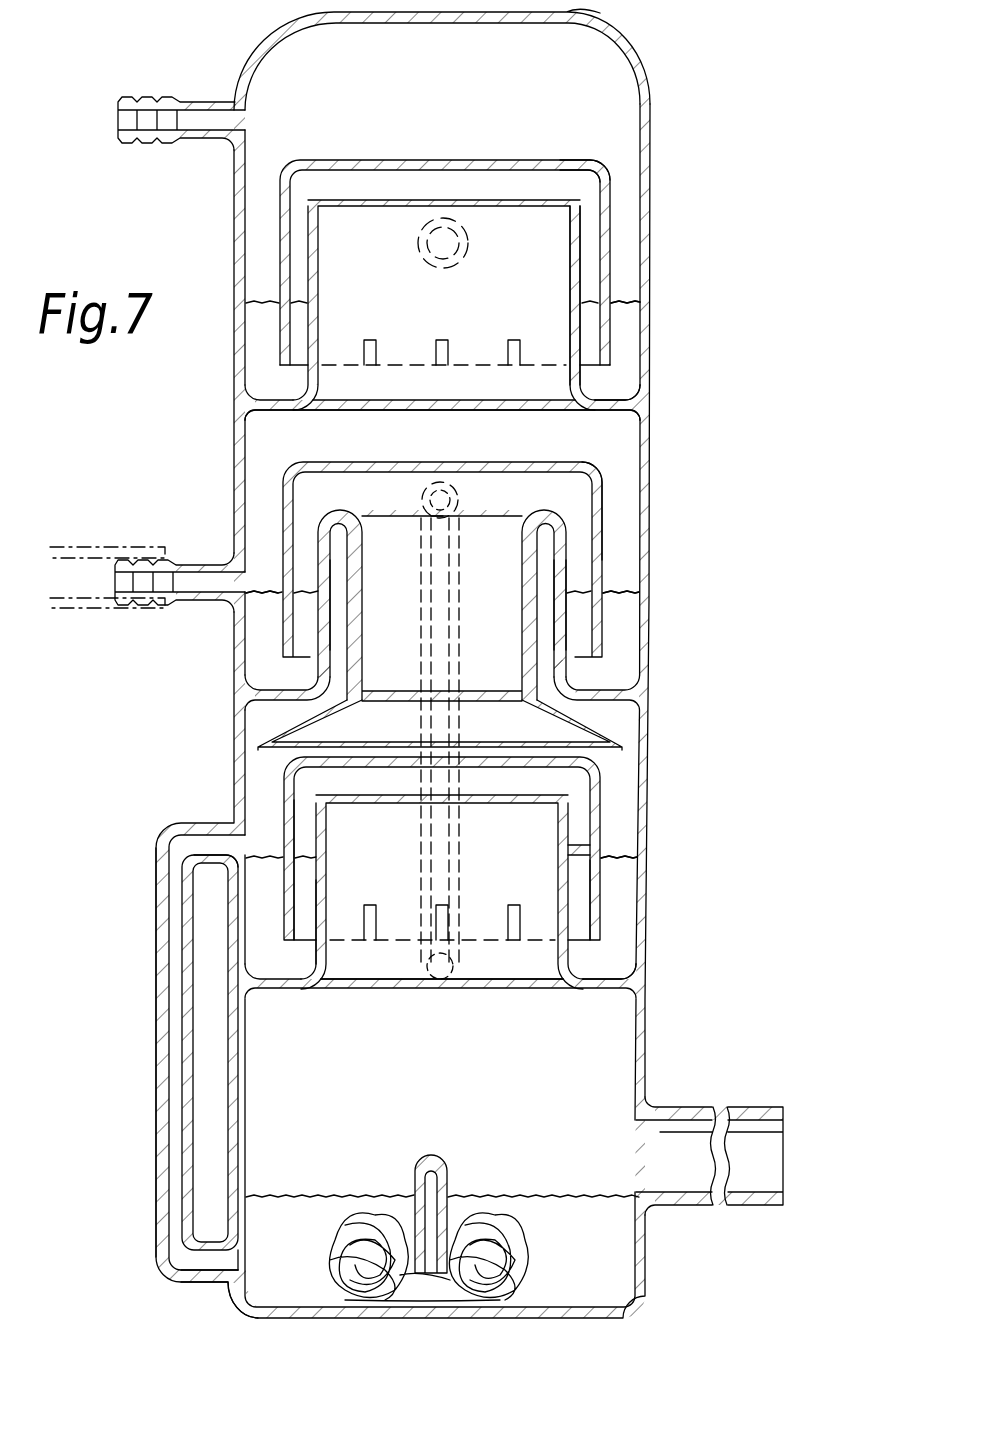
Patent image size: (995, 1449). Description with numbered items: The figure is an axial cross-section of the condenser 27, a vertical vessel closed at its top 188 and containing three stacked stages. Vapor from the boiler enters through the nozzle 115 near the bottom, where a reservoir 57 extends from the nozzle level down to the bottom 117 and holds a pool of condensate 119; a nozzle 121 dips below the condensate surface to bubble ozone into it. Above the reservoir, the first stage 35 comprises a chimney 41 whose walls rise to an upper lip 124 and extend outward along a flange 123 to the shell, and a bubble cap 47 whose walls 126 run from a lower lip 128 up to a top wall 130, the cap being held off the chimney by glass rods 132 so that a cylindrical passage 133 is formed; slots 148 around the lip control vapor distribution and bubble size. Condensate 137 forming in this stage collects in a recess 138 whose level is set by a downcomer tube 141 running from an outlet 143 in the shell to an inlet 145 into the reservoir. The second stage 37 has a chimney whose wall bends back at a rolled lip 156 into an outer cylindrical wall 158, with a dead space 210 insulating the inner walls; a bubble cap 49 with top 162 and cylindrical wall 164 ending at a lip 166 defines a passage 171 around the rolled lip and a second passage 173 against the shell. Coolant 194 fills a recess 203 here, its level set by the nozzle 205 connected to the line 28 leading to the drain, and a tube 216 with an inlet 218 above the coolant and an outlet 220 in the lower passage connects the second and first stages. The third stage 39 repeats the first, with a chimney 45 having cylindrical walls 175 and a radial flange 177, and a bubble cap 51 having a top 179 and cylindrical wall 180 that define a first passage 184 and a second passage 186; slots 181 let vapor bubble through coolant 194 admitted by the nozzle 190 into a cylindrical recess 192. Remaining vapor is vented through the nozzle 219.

The condenser 27 is at (688, 111).
The top 188 is at (592, 12).
The nozzle 219 is at (152, 140).
The bubble cap 51 is at (352, 138).
The top 179 is at (500, 160).
The cylindrical wall 180 is at (612, 200).
The third stage 39 is at (252, 238).
The cylindrical walls 175 is at (583, 268).
The nozzle 190 is at (470, 243).
The slots 181 is at (458, 340).
The first passage 184 is at (596, 216).
The cylindrical recess 192 is at (290, 290).
The second passage 186 is at (622, 330).
The coolant 194 is at (262, 345).
The radial flange 177 is at (625, 396).
The second stage 37 is at (208, 493).
The nozzle 205 is at (210, 560).
The line 28 is at (115, 612).
The recess 203 is at (248, 615).
The top 162 is at (372, 462).
The bubble cap 49 is at (263, 461).
The cylindrical wall 164 is at (606, 548).
The rolled lip 156 is at (517, 510).
The cylindrical passage 171 is at (577, 525).
The cylindrical wall 158 is at (568, 580).
The dead space 210 is at (338, 612).
The inlet 218 is at (428, 482).
The tube 216 is at (457, 557).
The second passage 173 is at (625, 624).
The lip 166 is at (612, 690).
The chimney 45 is at (555, 398).
The cylindrical passage 133 is at (576, 803).
The first stage 35 is at (216, 745).
The bubble cap 47 is at (621, 778).
The top wall 130 is at (342, 768).
The upper lip 124 is at (532, 795).
The condensate 137 is at (304, 858).
The recess 138 is at (311, 913).
The glass rods 132 is at (582, 856).
The walls 126 is at (602, 893).
The slots 148 is at (528, 905).
The flange 123 is at (597, 992).
The lower lip 128 is at (605, 960).
The outlet 220 is at (423, 983).
The chimney 41 is at (493, 969).
The downcomer tube 141 is at (158, 1060).
The inlet 145 is at (206, 1207).
The outlet 143 is at (209, 884).
The condensate 119 is at (240, 1298).
The reservoir 57 is at (318, 1161).
The nozzle 121 is at (512, 1208).
The bottom 117 is at (525, 1302).
The nozzle 115 is at (782, 1078).